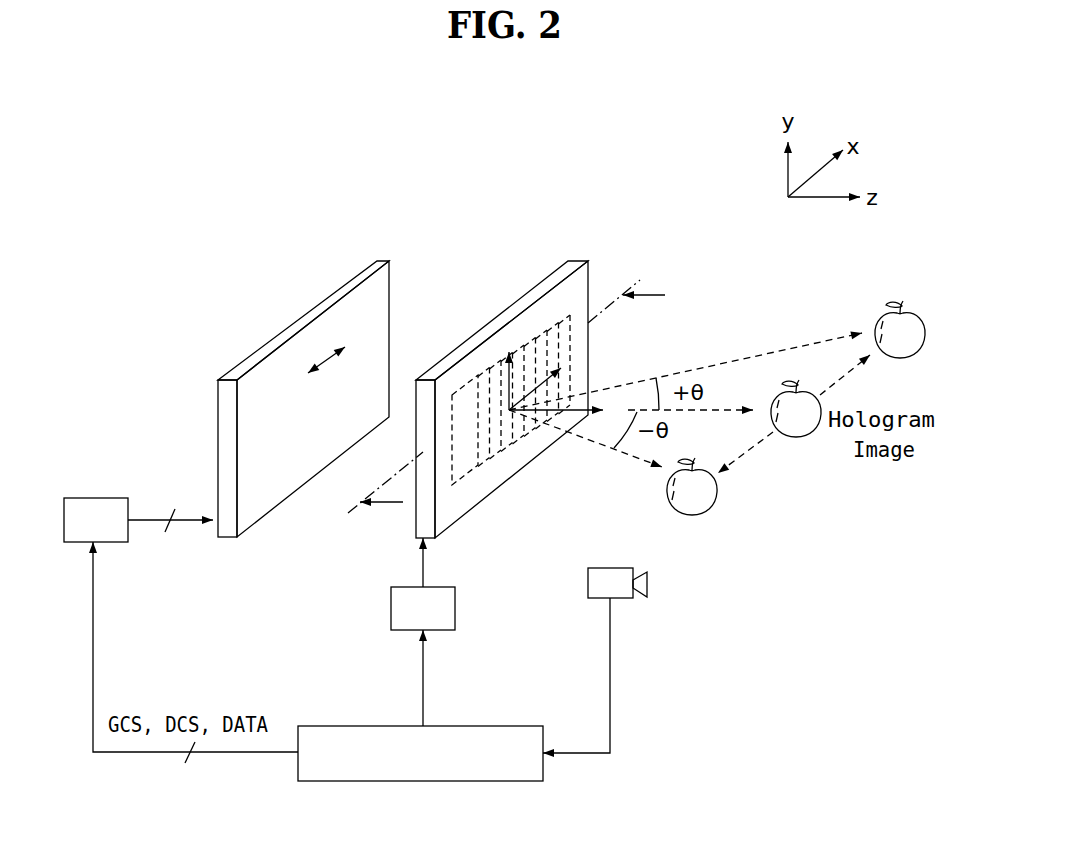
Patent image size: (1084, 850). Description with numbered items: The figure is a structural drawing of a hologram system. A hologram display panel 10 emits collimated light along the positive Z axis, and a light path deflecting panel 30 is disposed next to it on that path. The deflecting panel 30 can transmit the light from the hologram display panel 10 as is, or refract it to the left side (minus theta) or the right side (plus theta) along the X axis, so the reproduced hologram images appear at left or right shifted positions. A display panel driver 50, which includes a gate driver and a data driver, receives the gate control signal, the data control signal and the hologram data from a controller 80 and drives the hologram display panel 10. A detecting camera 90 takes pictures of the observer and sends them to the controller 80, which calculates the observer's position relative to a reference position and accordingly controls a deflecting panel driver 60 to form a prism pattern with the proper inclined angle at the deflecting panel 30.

The hologram display panel 10 is at (377, 261).
The light path deflecting panel 30 is at (571, 261).
The display panel driver 50 is at (110, 534).
The deflecting panel driver 60 is at (437, 622).
The controller 80 is at (434, 767).
The detecting camera 90 is at (647, 585).